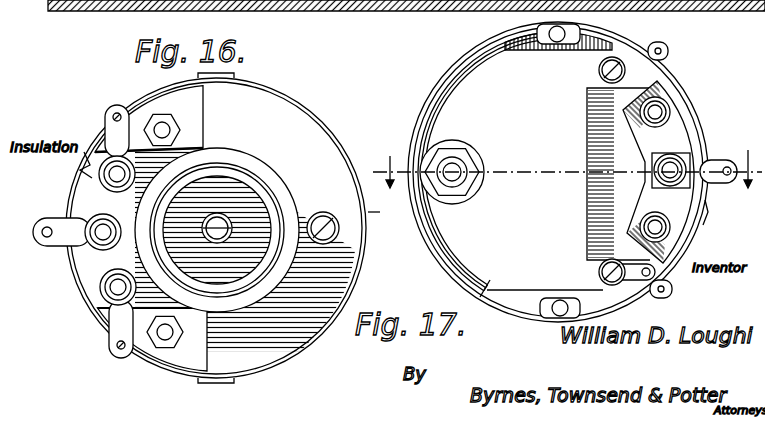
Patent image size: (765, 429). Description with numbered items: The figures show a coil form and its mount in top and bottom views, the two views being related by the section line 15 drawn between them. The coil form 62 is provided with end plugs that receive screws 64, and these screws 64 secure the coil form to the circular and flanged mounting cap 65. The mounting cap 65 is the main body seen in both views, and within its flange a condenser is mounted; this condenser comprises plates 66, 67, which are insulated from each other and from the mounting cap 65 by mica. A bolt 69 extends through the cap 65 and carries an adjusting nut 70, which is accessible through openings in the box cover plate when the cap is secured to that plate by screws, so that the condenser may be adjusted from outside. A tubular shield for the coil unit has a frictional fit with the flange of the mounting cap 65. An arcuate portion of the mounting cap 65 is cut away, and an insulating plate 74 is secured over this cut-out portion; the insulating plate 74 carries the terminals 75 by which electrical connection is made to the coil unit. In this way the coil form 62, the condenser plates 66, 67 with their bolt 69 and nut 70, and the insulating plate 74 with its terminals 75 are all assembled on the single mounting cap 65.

In FIG. 16, the section line 15- 15 is at (408, 213).
In FIG. 17, the section line 15- 15 is at (762, 212).
In FIG. 16, the coil form 62 is at (238, 173).
In FIG. 16, the screws 64 is at (224, 240).
In FIG. 16, the mounting cap 65 is at (314, 132).
In FIG. 17, the mounting cap 65 is at (462, 62).
In FIG. 17, the condenser plate 66 is at (637, 165).
In FIG. 17, the condenser plate 67 is at (478, 304).
In FIG. 16, the bolt 69 is at (340, 236).
In FIG. 17, the bolt 69 is at (427, 252).
In FIG. 17, the adjusting nut 70 is at (461, 164).
In FIG. 16, the insulating plate 74 is at (151, 107).
In FIG. 17, the insulating plate 74 is at (677, 138).
In FIG. 16, the terminals 75 is at (107, 320).
In FIG. 17, the terminals 75 is at (703, 225).